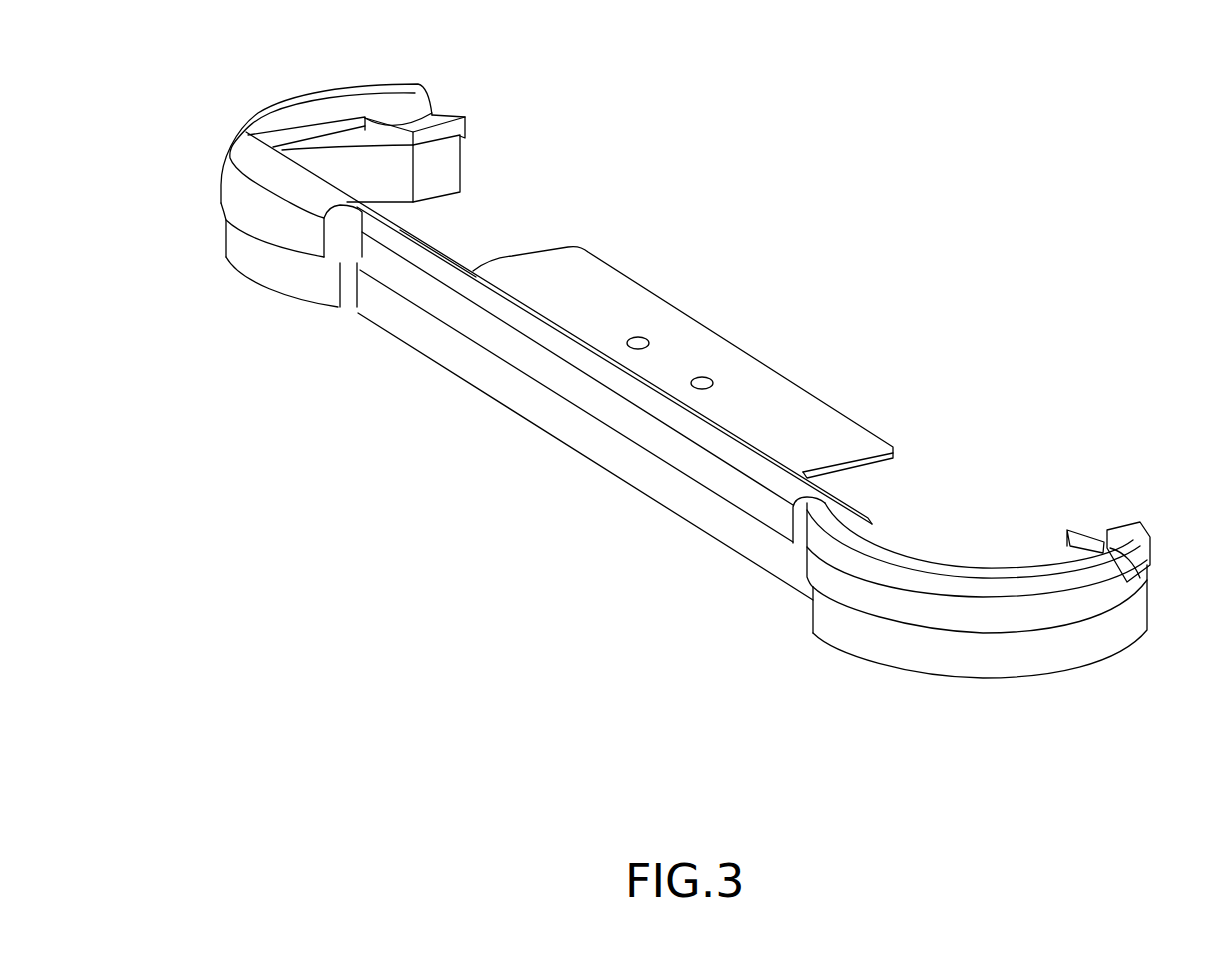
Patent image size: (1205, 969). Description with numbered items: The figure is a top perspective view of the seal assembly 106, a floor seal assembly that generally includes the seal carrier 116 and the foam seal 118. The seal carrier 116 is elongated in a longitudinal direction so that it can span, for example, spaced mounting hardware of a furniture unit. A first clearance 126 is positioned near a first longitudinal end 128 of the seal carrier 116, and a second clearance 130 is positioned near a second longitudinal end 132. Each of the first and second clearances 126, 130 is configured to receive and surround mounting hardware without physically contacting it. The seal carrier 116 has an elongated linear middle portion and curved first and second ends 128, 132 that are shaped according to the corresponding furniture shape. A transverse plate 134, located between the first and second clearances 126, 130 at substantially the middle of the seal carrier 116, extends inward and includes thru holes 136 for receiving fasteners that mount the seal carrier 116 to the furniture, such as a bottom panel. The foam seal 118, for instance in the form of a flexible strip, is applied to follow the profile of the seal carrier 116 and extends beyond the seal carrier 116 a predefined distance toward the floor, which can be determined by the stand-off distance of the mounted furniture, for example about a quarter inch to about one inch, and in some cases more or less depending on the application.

The seal assembly 106 is at (232, 100).
The first longitudinal end 128 is at (318, 72).
The first clearance 126 is at (468, 232).
The thru holes 136 is at (648, 338).
The seal carrier 116 is at (398, 275).
The foam seal 118 is at (447, 357).
The transverse plate 134 is at (632, 300).
The second clearance 130 is at (940, 512).
The second longitudinal end 132 is at (1050, 690).